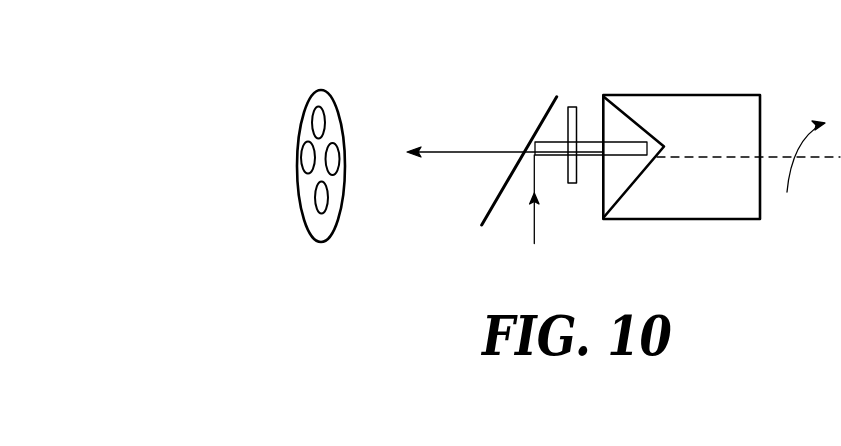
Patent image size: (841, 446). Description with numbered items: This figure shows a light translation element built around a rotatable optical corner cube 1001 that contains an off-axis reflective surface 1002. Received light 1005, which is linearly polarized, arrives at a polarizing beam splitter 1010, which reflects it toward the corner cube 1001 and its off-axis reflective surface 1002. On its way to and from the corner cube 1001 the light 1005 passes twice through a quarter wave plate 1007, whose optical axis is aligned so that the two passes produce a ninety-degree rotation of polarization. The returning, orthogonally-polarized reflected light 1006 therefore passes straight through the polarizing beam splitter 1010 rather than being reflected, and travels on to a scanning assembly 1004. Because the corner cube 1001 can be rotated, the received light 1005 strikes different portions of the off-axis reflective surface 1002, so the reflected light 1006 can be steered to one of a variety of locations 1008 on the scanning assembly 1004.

The rotatable optical corner cube 1001 is at (761, 123).
The off-axis reflective surface 1002 is at (624, 112).
The scanning assembly 1004 is at (335, 223).
The received light 1005 is at (537, 218).
The reflected light 1006 is at (497, 151).
The quarter wave plate 1007 is at (572, 107).
The locations 1008 is at (308, 157).
The polarizing beam splitter 1010 is at (544, 117).